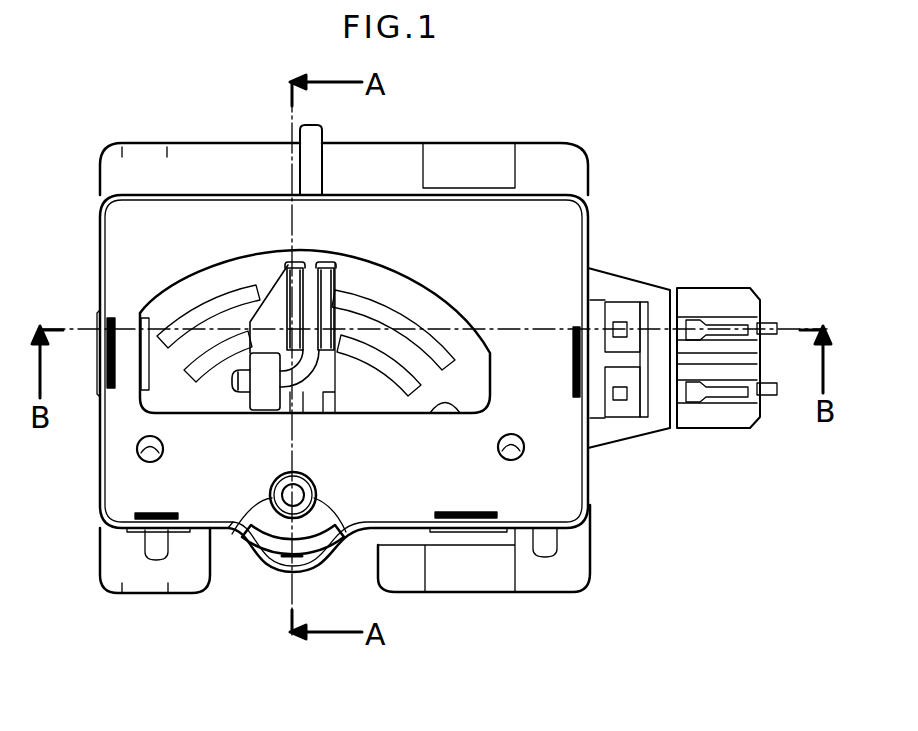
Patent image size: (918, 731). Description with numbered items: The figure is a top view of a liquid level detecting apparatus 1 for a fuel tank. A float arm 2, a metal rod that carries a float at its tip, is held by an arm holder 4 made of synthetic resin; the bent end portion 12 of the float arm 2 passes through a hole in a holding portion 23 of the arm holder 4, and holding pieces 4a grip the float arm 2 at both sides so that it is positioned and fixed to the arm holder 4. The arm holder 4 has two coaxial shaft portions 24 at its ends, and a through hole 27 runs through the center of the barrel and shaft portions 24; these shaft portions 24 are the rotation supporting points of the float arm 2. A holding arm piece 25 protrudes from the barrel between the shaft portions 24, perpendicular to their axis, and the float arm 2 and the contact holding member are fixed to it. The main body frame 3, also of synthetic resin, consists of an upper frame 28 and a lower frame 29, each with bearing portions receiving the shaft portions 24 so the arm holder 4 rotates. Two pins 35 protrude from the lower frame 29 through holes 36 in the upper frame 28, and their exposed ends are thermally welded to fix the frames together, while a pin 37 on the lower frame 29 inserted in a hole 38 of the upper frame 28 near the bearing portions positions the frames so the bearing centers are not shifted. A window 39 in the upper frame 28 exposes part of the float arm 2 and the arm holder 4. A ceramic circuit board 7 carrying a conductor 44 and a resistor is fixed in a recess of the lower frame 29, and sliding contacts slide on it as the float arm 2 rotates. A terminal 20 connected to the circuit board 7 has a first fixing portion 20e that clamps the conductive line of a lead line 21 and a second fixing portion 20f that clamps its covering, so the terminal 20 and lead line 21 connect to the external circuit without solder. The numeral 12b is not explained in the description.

The liquid level detecting apparatus 1 is at (612, 184).
The float arm 2 is at (317, 163).
The main body frame 3 is at (213, 223).
The arm holder 4 is at (265, 303).
The holding pieces 4a is at (303, 267).
The circuit board 7 is at (178, 296).
The bent end portion 12 is at (238, 388).
The support legs 12b is at (307, 405).
The terminal 20 is at (613, 317).
The first fixing portion 20e is at (703, 320).
The second fixing portion 20f is at (745, 317).
The lead line 21 is at (770, 325).
The holding portion 23 is at (247, 415).
The shaft portions 24 is at (233, 535).
The holding arm piece 25 is at (250, 318).
The through hole 27 is at (308, 510).
The upper frame 28 is at (168, 227).
The lower frame 29 is at (537, 170).
The pins 35 is at (140, 442).
The holes 36 is at (150, 462).
The pin 37 is at (266, 544).
The hole 38 is at (285, 541).
The window 39 is at (443, 410).
The conductor 44 is at (387, 310).